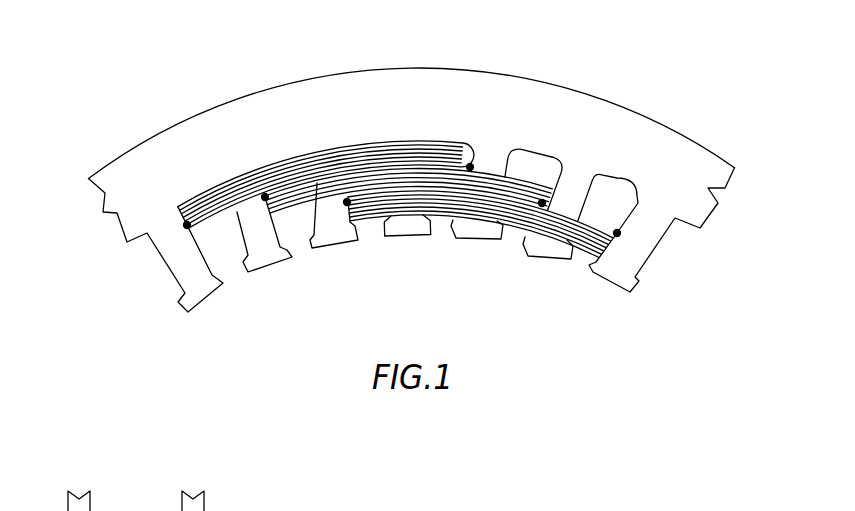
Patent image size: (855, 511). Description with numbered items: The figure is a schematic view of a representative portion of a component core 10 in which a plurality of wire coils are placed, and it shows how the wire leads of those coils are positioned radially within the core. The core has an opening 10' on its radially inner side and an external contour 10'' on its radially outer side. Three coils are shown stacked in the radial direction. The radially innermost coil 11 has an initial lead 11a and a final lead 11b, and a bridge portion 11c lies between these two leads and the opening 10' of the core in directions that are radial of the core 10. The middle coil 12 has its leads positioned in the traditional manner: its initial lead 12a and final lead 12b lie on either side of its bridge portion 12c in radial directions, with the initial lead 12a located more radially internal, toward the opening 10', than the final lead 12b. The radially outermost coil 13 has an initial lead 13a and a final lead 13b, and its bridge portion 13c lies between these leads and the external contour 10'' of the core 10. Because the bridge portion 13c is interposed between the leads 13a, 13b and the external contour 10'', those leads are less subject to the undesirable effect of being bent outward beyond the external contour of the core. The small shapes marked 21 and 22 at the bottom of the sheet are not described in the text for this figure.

The component core 10 is at (412, 168).
The external contour of the component core 10'' is at (361, 41).
The opening of the core 10' is at (381, 305).
The radially innermost coil 11 is at (578, 265).
The initial lead 11a is at (617, 233).
The final lead 11b is at (348, 200).
The bridge portion 11c is at (443, 207).
The middle coil 12 is at (492, 152).
The initial lead 12a is at (541, 203).
The final lead 12b is at (237, 213).
The bridge portion 12c is at (314, 212).
The radially outermost coil 13 is at (400, 122).
The initial lead 13a is at (470, 166).
The final lead 13b is at (187, 225).
The bridge portion 13c is at (287, 170).
The stator segment (partial, adjacent figure) 21 is at (105, 501).
The stator segment (partial, adjacent figure) 22 is at (239, 501).